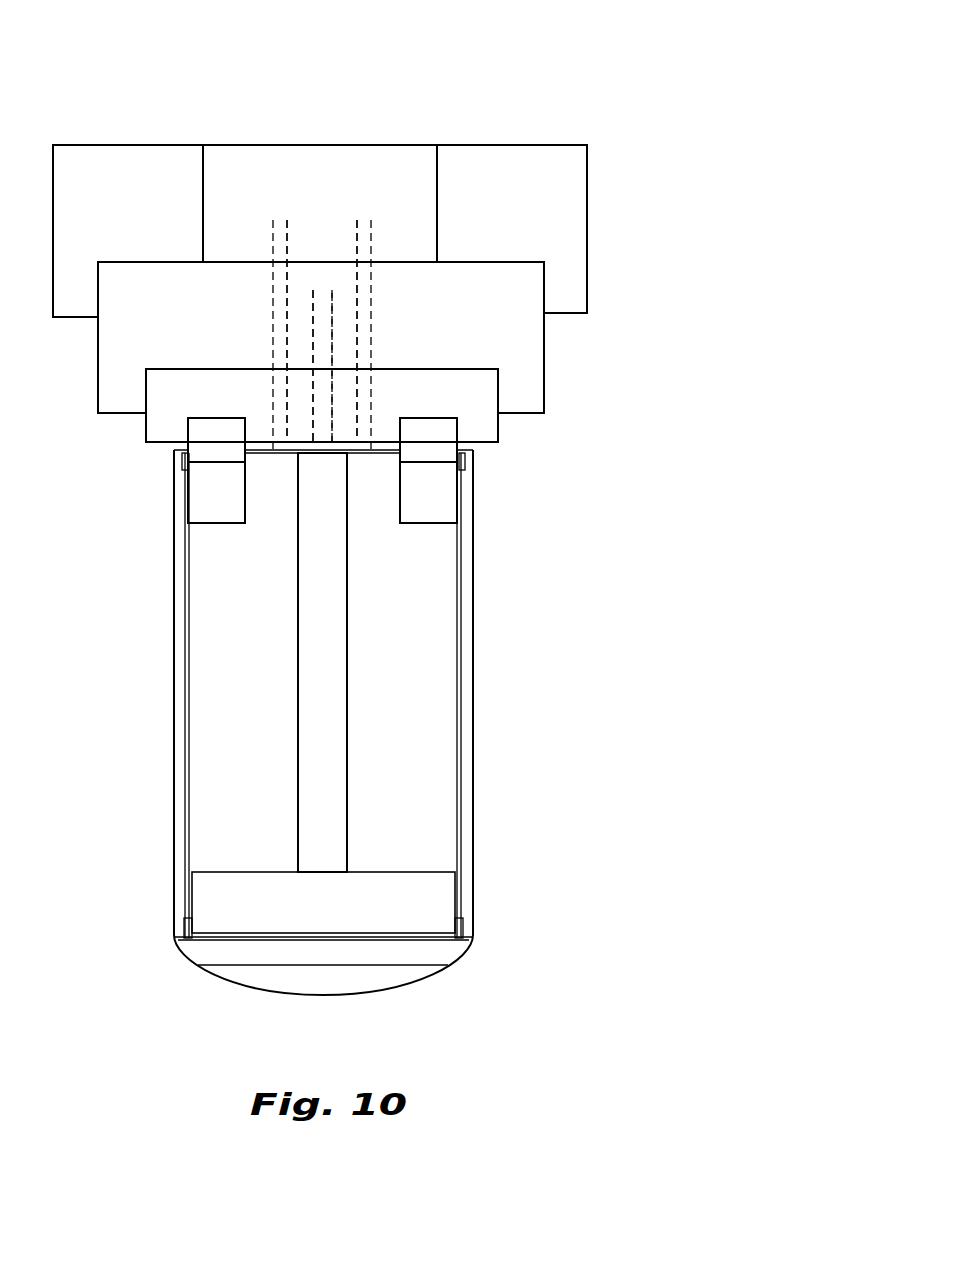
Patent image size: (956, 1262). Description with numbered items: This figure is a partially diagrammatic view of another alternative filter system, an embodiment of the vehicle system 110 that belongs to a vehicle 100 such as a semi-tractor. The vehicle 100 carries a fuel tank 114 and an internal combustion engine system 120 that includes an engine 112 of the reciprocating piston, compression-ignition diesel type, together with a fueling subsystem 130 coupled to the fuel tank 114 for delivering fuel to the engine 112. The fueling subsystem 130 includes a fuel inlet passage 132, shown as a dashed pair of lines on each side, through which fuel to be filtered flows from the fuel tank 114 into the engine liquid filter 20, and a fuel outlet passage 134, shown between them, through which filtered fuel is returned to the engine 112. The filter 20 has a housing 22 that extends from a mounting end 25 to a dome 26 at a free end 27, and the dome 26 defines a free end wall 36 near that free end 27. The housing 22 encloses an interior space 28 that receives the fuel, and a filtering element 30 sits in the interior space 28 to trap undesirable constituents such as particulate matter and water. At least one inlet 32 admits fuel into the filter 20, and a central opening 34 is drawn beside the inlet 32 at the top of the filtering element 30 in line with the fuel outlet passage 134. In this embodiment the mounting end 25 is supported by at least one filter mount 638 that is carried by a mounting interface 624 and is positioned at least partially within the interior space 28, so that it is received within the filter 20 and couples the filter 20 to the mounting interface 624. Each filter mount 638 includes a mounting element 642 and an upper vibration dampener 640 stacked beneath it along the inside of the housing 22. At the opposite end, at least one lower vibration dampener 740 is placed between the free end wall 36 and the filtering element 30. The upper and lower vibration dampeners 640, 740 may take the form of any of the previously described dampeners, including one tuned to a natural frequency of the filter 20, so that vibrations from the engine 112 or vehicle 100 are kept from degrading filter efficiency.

The vehicle system 110 is at (532, 80).
The vehicle 100 is at (568, 190).
The engine 112 is at (535, 345).
The fuel tank 114 is at (342, 168).
The internal combustion engine system 120 is at (125, 428).
The fueling subsystem 130 is at (318, 173).
The fuel inlet passage 132 is at (280, 220).
The fuel outlet passage 134 is at (320, 290).
The mounting interface 624 is at (490, 423).
The mounting element 642 is at (212, 435).
The upper vibration dampener 640 is at (227, 515).
The filter mount 638 is at (205, 487).
The mounting end 25 is at (137, 455).
The inlet 32 is at (278, 453).
The opening 34 is at (322, 453).
The housing 22 is at (478, 695).
The interior space 28 is at (185, 670).
The filtering element 30 is at (322, 752).
The lower vibration dampener 740 is at (445, 903).
The dome 26 is at (423, 985).
The free end wall 36 is at (242, 980).
The free end 27 is at (158, 970).
The engine liquid filter 20 is at (152, 778).